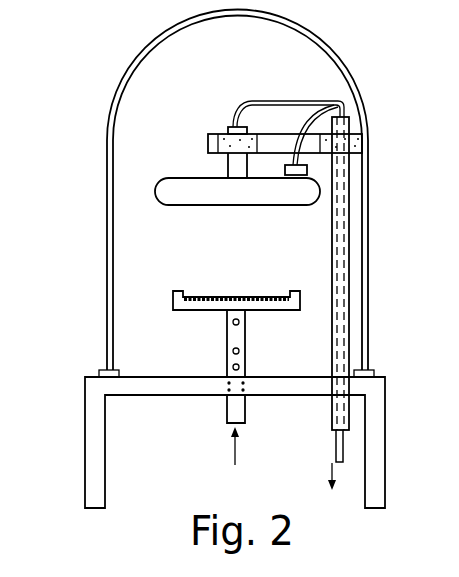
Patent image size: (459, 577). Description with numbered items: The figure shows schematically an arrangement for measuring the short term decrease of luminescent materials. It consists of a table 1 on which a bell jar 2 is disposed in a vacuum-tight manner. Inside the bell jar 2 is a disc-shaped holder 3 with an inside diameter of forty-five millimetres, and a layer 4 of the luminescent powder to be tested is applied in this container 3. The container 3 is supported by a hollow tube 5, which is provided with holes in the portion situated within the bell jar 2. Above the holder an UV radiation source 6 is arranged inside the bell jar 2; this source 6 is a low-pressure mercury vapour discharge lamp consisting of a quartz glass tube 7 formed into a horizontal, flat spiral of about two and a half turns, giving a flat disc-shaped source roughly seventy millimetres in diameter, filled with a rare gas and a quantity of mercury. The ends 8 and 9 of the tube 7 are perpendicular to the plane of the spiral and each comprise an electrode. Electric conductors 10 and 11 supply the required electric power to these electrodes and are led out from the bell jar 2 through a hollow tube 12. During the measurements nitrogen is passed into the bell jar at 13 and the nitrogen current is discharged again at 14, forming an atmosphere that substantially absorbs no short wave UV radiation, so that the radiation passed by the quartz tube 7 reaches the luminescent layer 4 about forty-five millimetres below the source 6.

The table 1 is at (98, 442).
The bell jar 2 is at (123, 90).
The disc-shaped holder 3 is at (182, 305).
The layer of luminescent powder 4 is at (267, 291).
The hollow tube 5 is at (248, 353).
The UV radiation source 6 is at (183, 167).
The quartz glass tube 7 is at (165, 187).
The end of the tube 8 is at (228, 160).
The end of the tube 9 is at (307, 168).
The electric conductor 10 is at (236, 122).
The electric conductor 11 is at (297, 125).
The hollow tube 12 is at (352, 230).
The nitrogen inlet 13 is at (235, 450).
The nitrogen outlet 14 is at (332, 468).